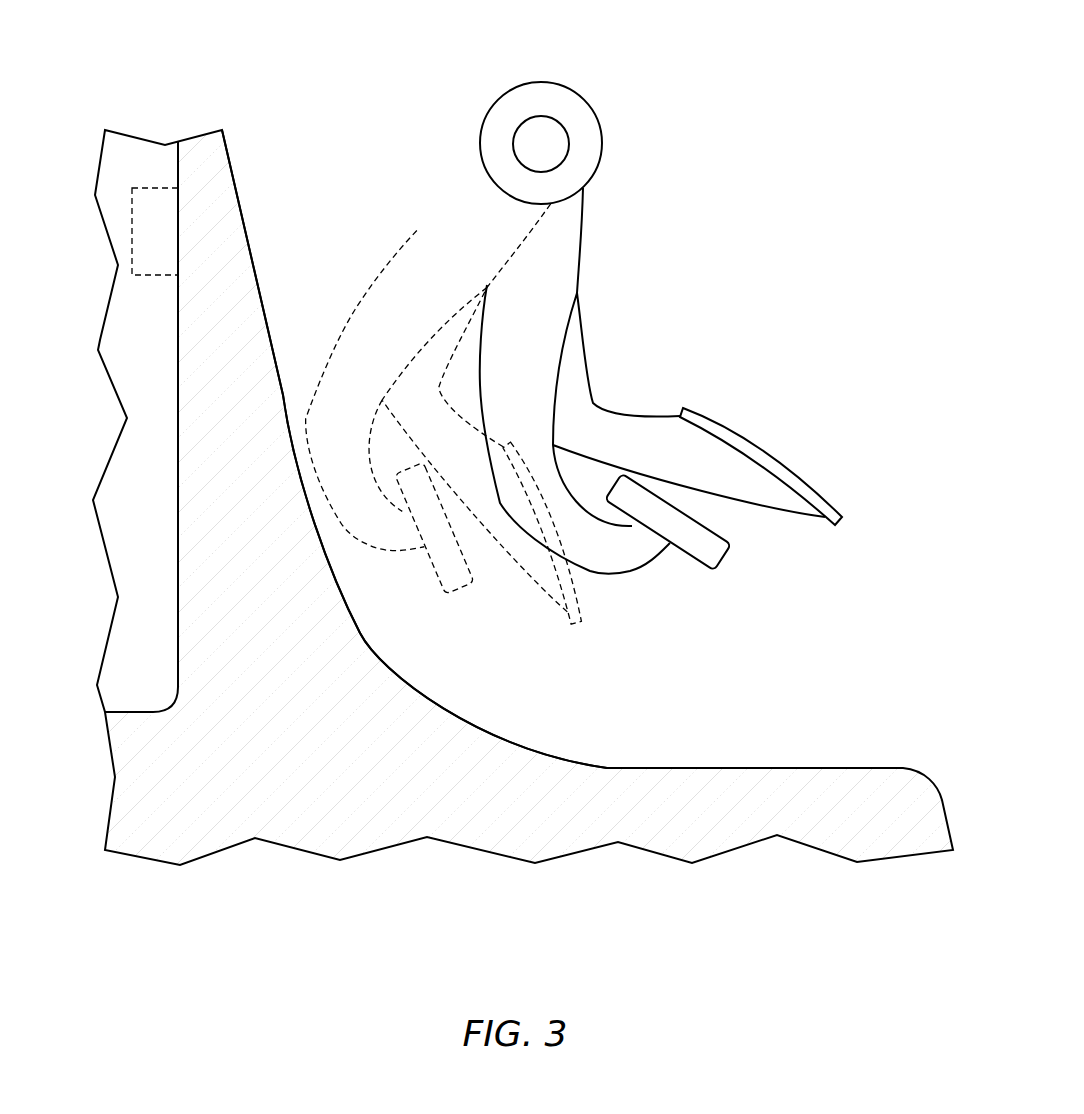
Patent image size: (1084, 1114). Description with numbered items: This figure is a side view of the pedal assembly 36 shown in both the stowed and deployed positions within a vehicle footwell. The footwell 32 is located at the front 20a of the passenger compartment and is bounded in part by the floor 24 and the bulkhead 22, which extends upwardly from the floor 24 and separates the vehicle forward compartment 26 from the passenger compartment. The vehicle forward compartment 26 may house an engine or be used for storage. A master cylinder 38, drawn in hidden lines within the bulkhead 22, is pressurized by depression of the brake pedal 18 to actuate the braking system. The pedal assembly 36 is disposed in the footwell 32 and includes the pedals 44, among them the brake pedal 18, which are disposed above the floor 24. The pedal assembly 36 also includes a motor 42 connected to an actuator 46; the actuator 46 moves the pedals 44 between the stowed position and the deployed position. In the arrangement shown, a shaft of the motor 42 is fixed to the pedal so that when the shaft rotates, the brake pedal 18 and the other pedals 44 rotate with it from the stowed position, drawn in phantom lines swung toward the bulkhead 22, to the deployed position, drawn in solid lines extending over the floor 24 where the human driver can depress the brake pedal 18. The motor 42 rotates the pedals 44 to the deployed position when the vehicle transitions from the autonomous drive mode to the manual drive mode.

The brake pedal 18 is at (727, 560).
The front 20a is at (830, 684).
The bulkhead 22 is at (262, 297).
The floor 24 is at (733, 768).
The vehicle forward compartment 26 is at (140, 328).
The footwell 32 is at (845, 587).
The pedal assembly 36 is at (707, 152).
The master cylinder 38 is at (155, 188).
The motor 42 is at (541, 82).
The pedals 44 is at (765, 448).
The actuator 46 is at (545, 147).